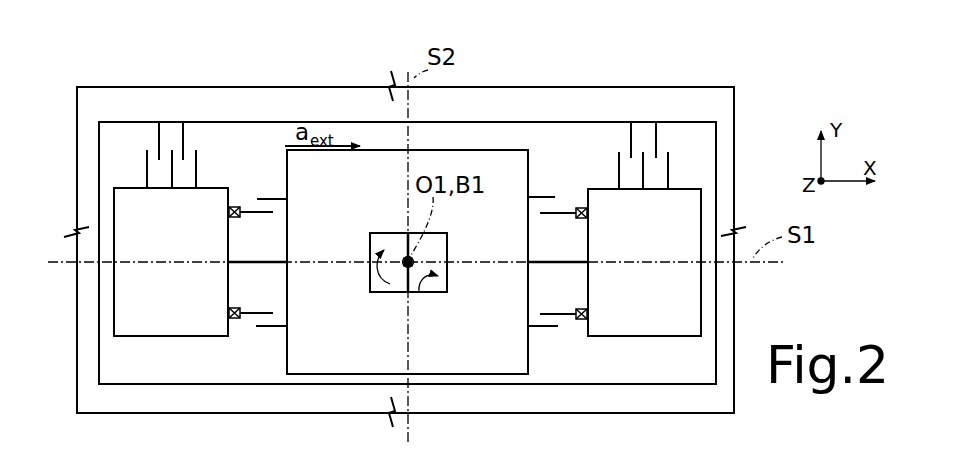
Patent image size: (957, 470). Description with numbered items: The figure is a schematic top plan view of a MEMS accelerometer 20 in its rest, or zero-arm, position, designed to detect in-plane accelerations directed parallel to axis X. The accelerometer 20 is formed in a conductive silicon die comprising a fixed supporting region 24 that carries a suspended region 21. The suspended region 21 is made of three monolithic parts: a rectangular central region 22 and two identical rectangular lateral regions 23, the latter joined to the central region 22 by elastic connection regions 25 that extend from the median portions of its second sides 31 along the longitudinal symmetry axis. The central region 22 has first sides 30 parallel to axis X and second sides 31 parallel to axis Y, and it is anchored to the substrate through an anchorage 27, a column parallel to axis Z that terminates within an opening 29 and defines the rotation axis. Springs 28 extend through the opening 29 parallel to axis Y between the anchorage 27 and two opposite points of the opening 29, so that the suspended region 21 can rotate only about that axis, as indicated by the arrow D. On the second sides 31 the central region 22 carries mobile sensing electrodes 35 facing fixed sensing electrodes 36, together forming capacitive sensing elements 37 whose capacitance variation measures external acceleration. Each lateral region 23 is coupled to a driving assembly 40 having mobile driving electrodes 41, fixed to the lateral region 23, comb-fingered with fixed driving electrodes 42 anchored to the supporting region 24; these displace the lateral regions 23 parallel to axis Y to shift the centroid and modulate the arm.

The accelerometer 20 is at (389, 230).
The suspended region 21 is at (448, 147).
The central region 22 is at (498, 358).
The lateral regions 23 is at (183, 238).
The supporting region 24 is at (678, 84).
The elastic connection regions 25 is at (235, 265).
The anchorage 27 is at (412, 268).
The springs 28 is at (408, 240).
The opening 29 is at (420, 292).
The first sides 30 is at (482, 146).
The second sides 31 is at (285, 182).
The mobile sensing electrodes 35 is at (283, 197).
The fixed sensing electrodes 36 is at (270, 216).
The capacitive sensing elements 37 is at (273, 348).
The driving assembly 40 is at (447, 193).
The mobile driving electrodes 41 is at (172, 182).
The fixed driving electrodes 42 is at (183, 147).
The arrow D is at (382, 283).